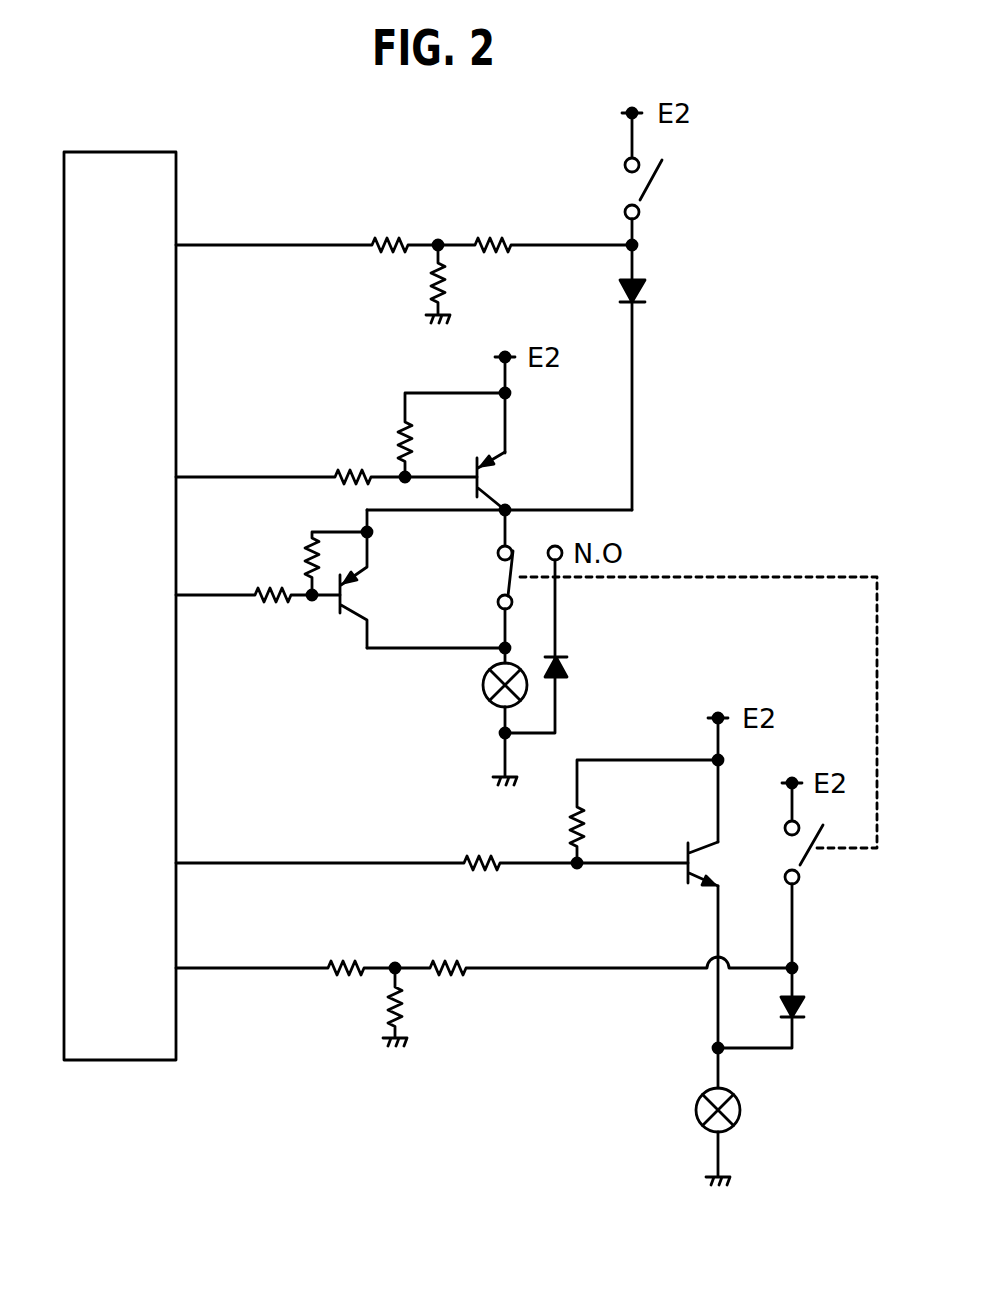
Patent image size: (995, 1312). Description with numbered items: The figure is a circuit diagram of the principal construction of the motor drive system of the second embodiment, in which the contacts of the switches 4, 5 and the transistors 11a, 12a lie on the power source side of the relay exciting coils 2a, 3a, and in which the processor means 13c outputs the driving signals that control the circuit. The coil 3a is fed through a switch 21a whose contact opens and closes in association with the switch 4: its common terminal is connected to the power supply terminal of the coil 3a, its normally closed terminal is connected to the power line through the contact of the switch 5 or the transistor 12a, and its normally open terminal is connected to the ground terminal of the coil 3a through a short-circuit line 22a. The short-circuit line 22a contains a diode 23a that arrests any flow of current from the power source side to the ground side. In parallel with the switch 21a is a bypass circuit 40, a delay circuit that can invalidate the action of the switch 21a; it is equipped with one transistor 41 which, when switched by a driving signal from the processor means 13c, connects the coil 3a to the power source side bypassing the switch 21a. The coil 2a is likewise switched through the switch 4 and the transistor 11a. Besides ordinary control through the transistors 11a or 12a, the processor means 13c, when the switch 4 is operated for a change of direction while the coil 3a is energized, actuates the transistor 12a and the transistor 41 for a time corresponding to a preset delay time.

The processor means 13c is at (107, 152).
The switch 5 is at (647, 192).
The transistor 12a is at (492, 472).
The transistor 41 is at (352, 613).
The bypass circuit 40 is at (340, 636).
The switch 21a is at (505, 573).
The short-circuit line 22a is at (555, 610).
The diode 23a is at (560, 677).
The exciting coil 3a is at (488, 705).
The transistor 11a is at (702, 838).
The switch 4 is at (810, 857).
The exciting coil 2a is at (702, 1093).